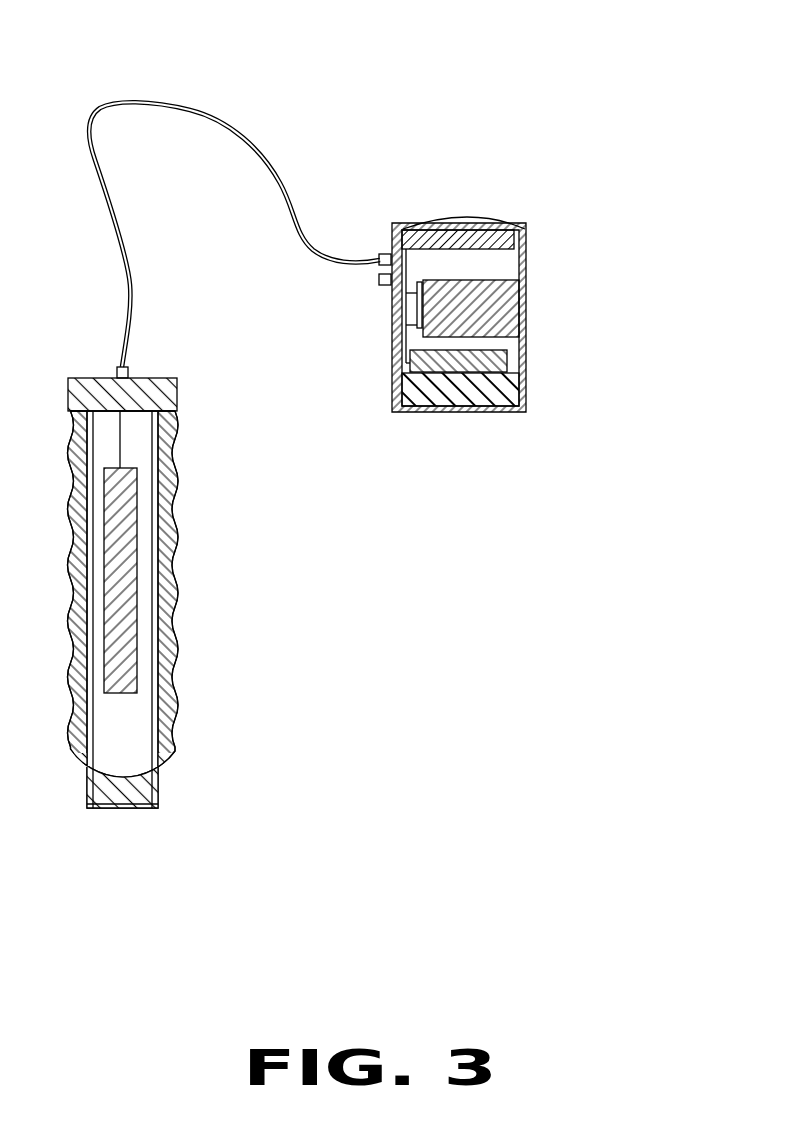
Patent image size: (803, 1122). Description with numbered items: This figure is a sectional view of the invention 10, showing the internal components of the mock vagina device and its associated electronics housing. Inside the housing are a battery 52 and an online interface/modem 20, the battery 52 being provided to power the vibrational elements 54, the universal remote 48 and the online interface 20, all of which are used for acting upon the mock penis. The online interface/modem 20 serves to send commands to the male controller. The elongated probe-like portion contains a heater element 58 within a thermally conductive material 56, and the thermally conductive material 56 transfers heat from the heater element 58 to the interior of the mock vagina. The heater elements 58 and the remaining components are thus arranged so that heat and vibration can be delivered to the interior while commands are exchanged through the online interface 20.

The measurement system 10 is at (592, 98).
The online interface/modem 20 is at (487, 293).
The universal remote 48 is at (513, 393).
The battery 52 is at (495, 302).
The vibrational elements 54 is at (120, 597).
The thermally conductive material 56 is at (155, 637).
The heater elements 58 is at (156, 381).